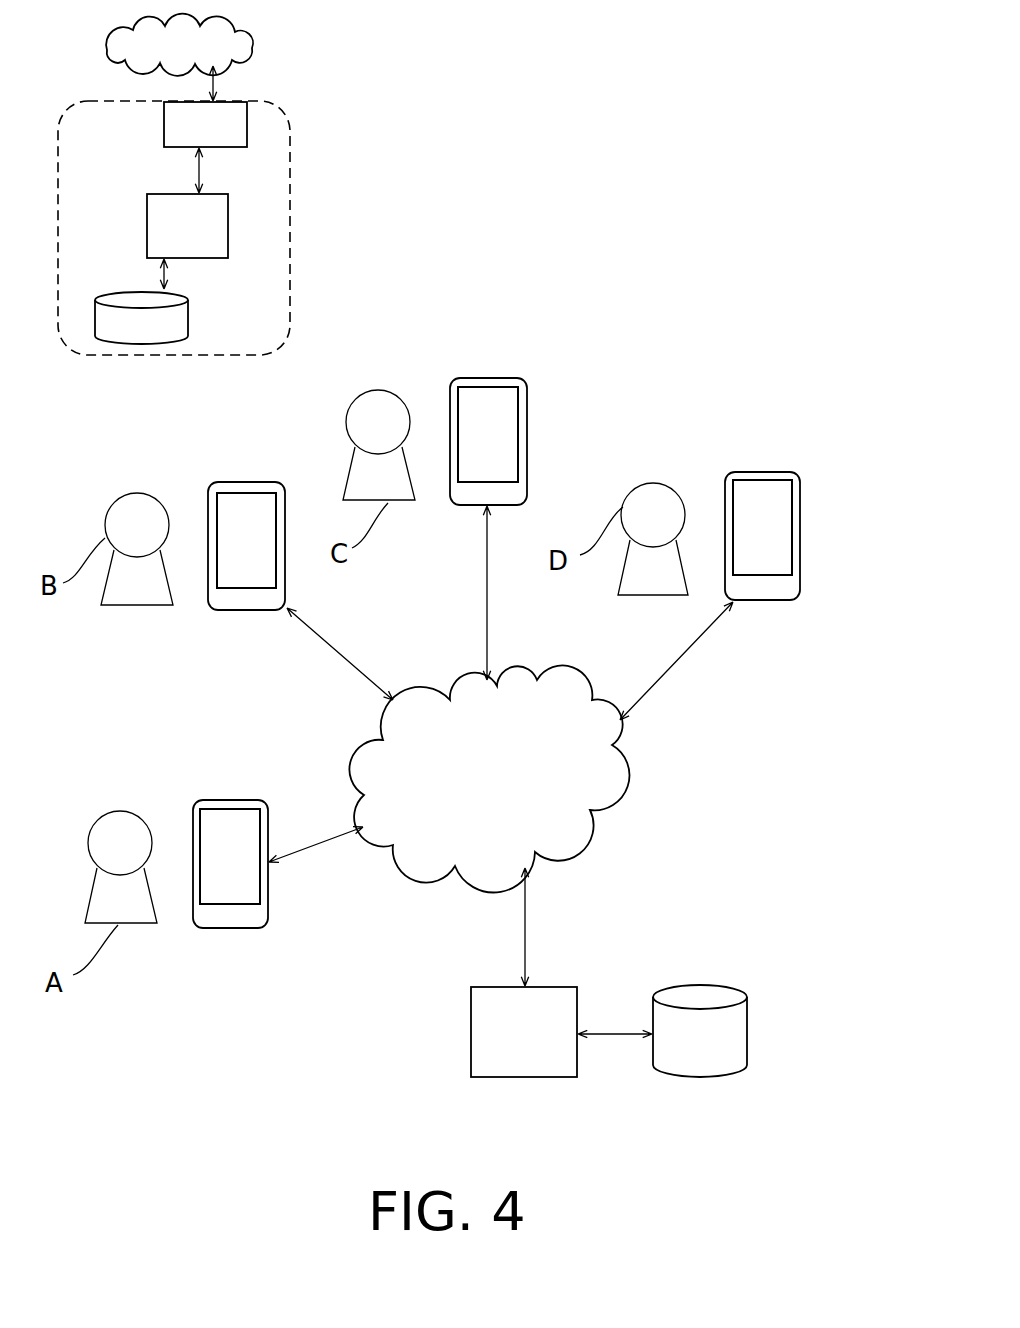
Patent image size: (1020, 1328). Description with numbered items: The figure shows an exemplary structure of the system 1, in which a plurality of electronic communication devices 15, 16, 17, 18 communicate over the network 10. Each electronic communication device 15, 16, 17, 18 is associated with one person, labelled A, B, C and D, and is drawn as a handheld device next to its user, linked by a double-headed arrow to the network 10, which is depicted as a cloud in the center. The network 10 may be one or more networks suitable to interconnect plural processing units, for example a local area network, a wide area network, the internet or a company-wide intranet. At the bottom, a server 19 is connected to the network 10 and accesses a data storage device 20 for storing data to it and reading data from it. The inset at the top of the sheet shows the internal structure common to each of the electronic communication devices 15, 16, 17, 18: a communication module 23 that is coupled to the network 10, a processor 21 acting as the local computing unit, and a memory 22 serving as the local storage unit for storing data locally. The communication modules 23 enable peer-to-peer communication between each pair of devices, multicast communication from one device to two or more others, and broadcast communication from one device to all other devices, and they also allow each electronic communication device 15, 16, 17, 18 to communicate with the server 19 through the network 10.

The system 1 is at (214, 1083).
The network 10 is at (250, 49).
The electronic communication device 15 is at (215, 800).
The electronic communication device 16 is at (227, 483).
The electronic communication device 17 is at (490, 377).
The electronic communication device 18 is at (758, 473).
The server 19 is at (471, 1045).
The data storage device 20 is at (740, 988).
The processor 21 is at (147, 220).
The memory 22 is at (188, 320).
The communication module 23 is at (164, 130).